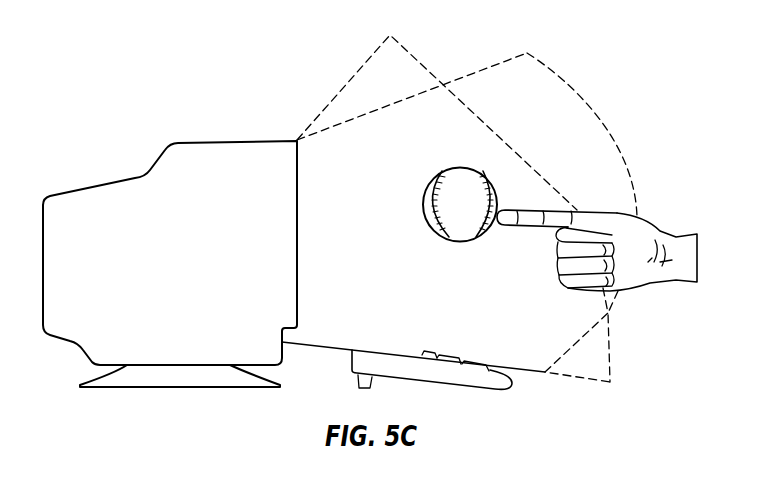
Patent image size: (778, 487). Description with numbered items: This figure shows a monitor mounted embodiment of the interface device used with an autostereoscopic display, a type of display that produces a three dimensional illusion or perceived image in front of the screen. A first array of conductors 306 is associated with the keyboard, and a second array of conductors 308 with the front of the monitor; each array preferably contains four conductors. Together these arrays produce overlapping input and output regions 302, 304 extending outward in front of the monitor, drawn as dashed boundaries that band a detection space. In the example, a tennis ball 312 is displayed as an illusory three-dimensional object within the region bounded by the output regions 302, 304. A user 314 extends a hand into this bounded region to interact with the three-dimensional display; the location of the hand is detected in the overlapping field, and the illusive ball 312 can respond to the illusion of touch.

The output region 302 is at (573, 97).
The output region 304 is at (410, 48).
The first array of conductors 306 is at (490, 393).
The second array of conductors 308 is at (269, 139).
The tennis ball 312 is at (483, 182).
The user 314 is at (688, 231).